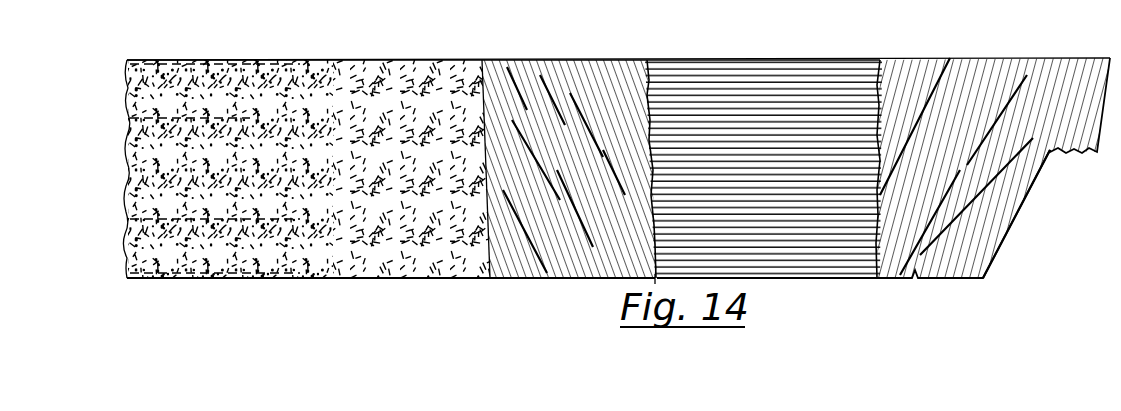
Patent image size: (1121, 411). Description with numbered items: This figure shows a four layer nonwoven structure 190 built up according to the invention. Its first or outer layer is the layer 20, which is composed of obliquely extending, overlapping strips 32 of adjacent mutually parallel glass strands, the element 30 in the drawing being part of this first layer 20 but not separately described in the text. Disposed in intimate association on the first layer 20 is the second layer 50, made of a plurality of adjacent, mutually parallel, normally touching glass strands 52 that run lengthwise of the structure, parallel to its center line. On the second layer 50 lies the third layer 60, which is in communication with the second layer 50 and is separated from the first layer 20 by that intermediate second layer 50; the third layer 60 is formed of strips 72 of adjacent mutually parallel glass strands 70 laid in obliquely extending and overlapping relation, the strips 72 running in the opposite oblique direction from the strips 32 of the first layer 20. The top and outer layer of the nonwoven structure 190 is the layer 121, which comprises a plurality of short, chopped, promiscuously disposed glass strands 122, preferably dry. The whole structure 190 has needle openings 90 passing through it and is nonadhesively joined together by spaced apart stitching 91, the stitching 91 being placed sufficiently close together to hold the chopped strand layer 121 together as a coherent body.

The first layer 20 is at (946, 25).
The fibrous web layer 30 is at (1008, 77).
The strips 32 is at (1040, 182).
The second layer 50 is at (791, 283).
The glass strands 52 is at (811, 83).
The third layer 60 is at (614, 26).
The glass strands 70 is at (590, 250).
The strips 72 is at (552, 80).
The needle openings 90 is at (345, 61).
The stitching 91 is at (168, 62).
The layer 121 is at (398, 16).
The chopped glass strands 122 is at (377, 95).
The nonwoven structure 190 is at (740, 30).